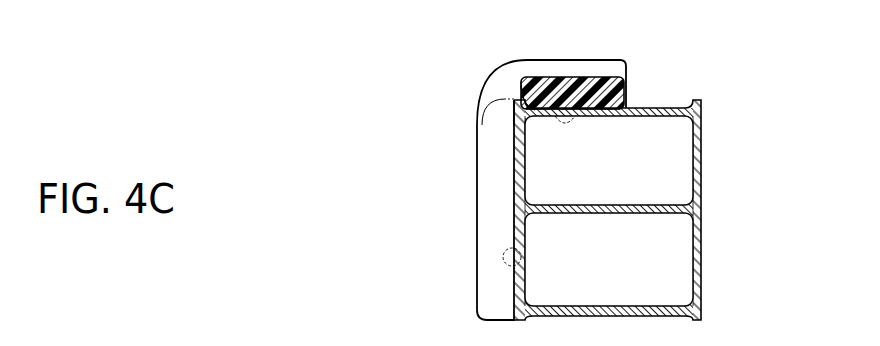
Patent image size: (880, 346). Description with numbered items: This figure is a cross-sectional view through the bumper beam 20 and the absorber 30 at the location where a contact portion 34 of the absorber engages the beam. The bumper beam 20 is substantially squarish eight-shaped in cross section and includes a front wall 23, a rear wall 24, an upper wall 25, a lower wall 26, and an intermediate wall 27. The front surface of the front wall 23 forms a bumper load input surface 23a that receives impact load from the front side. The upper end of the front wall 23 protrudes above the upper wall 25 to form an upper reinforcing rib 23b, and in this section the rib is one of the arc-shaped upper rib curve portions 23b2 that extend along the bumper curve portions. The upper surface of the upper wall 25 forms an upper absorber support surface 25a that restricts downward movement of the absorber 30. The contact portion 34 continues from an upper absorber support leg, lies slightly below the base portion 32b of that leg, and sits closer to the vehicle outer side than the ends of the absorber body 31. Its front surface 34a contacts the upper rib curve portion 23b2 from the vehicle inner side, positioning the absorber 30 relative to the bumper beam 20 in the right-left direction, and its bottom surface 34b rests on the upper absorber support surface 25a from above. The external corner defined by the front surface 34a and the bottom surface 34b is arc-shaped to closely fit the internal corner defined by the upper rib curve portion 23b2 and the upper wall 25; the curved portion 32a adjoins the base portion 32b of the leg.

The bumper beam 20 is at (705, 236).
The front wall 23 is at (528, 166).
The bumper load input surface 23a is at (524, 265).
The upper reinforcing rib 23b is at (478, 125).
The upper rib curve portion 23b2 is at (470, 128).
The rear wall 24 is at (704, 154).
The upper wall 25 is at (647, 120).
The upper absorber support surface 25a is at (635, 99).
The lower wall 26 is at (621, 302).
The intermediate wall 27 is at (623, 206).
The absorber 30 is at (472, 213).
The absorber body 31 is at (477, 232).
The curved portion of cap 32a is at (512, 70).
The base portion of upper absorber support leg 32b is at (552, 62).
The contact portion 34 is at (628, 84).
The front surface of contact portion 34a is at (512, 100).
The bottom surface of contact portion 34b is at (583, 107).